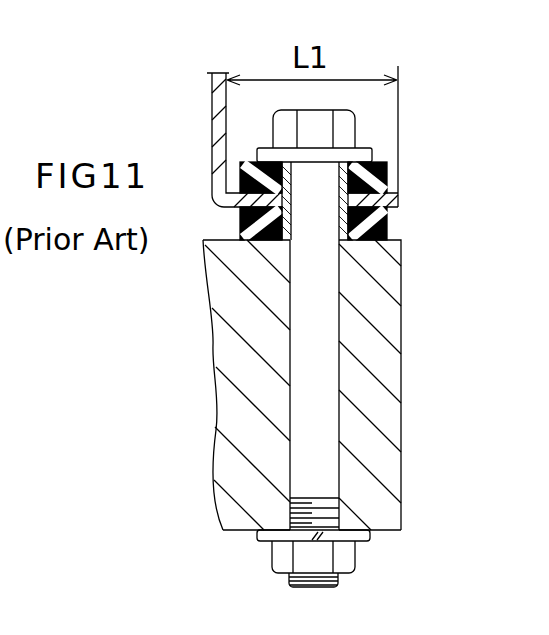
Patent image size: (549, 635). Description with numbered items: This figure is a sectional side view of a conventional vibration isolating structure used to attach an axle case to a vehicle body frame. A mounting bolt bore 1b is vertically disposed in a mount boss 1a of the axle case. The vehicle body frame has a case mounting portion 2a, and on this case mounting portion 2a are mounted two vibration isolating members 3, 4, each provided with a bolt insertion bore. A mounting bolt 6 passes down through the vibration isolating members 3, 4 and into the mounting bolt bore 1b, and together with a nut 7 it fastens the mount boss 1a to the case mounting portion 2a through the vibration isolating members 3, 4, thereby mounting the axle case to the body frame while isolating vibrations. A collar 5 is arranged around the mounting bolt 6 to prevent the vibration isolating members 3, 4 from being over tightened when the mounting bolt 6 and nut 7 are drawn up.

The mount boss 1a is at (402, 380).
The mounting bolt bore 1b is at (333, 363).
The case mounting portion 2a is at (400, 202).
The vibration isolating member 3 is at (393, 177).
The vibration isolating member 4 is at (393, 227).
The collar 5 is at (344, 255).
The mounting bolt 6 is at (349, 131).
The nut 7 is at (352, 558).